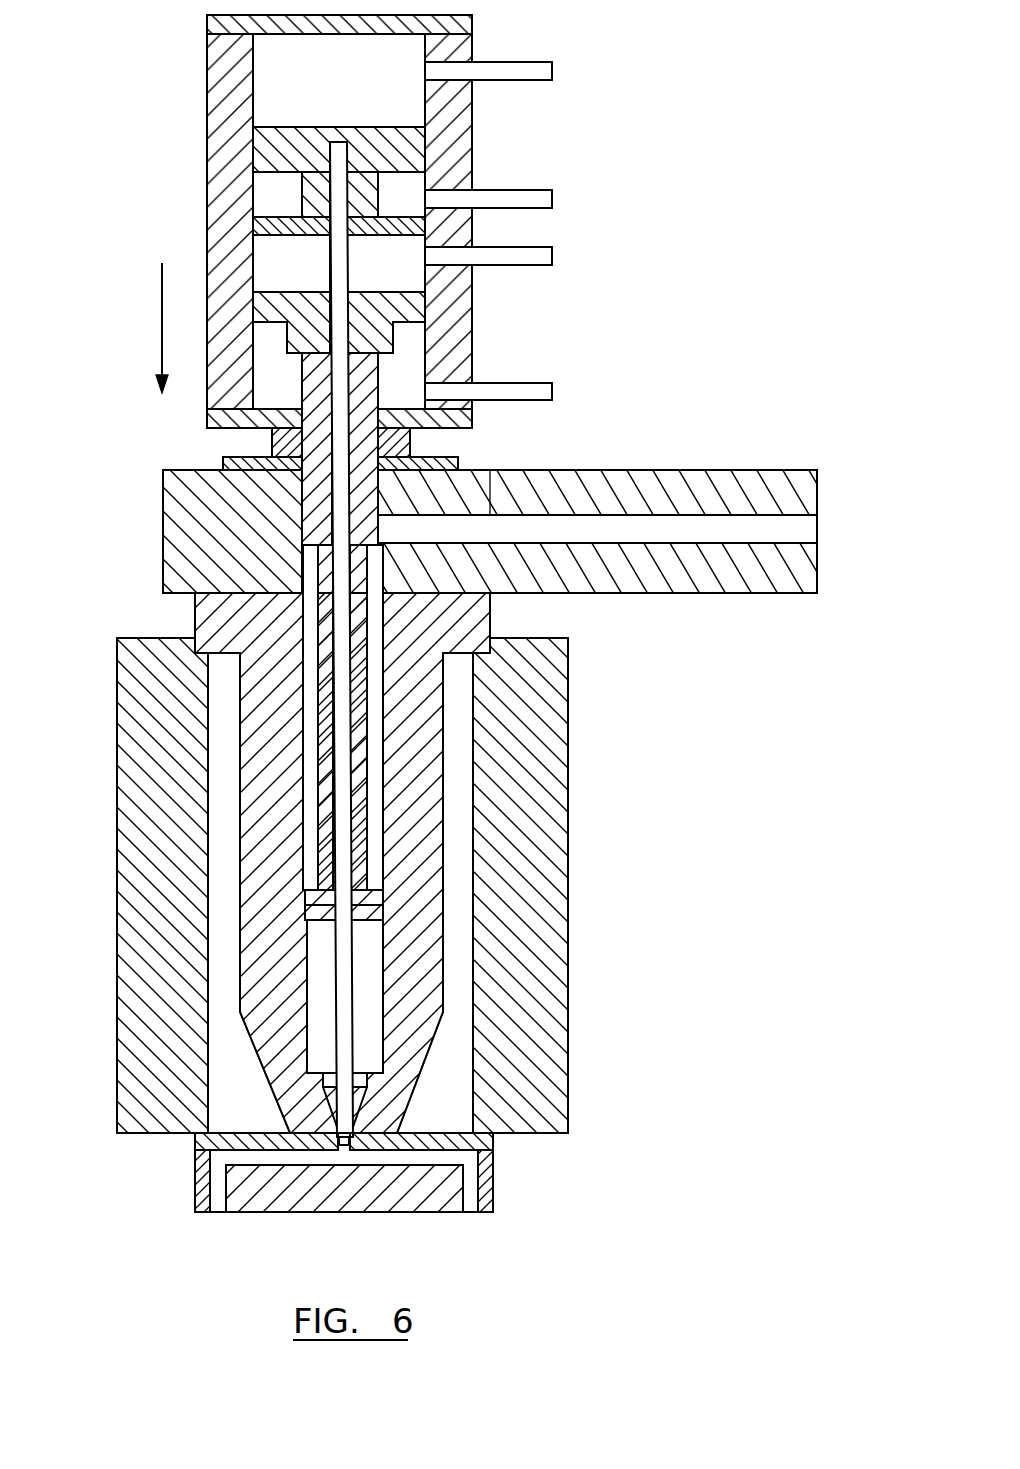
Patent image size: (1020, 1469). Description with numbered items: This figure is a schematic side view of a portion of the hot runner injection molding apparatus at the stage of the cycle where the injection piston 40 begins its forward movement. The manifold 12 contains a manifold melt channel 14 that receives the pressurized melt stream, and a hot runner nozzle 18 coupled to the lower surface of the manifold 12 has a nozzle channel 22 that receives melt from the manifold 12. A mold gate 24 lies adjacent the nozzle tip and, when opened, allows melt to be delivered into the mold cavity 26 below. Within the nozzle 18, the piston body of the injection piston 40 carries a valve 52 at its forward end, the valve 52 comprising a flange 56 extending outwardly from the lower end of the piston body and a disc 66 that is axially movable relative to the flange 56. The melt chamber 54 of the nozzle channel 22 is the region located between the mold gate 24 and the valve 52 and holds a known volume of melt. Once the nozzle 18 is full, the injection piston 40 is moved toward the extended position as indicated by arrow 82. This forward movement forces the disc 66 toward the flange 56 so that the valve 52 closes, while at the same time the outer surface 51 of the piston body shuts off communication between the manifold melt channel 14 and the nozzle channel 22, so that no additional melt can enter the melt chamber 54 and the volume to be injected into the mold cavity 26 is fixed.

The manifold 12 is at (752, 577).
The manifold melt channel 14 is at (707, 523).
The hot runner nozzle 18 is at (423, 792).
The nozzle channel 22 is at (307, 733).
The mold gate 24 is at (345, 1145).
The mold cavity 26 is at (472, 1183).
The injection piston 40 is at (315, 515).
The outer surface 51 is at (470, 505).
The valve 52 is at (377, 923).
The melt chamber 54 is at (375, 1012).
The flange 56 is at (313, 900).
The disc 66 is at (313, 918).
The arrow 82 is at (158, 307).